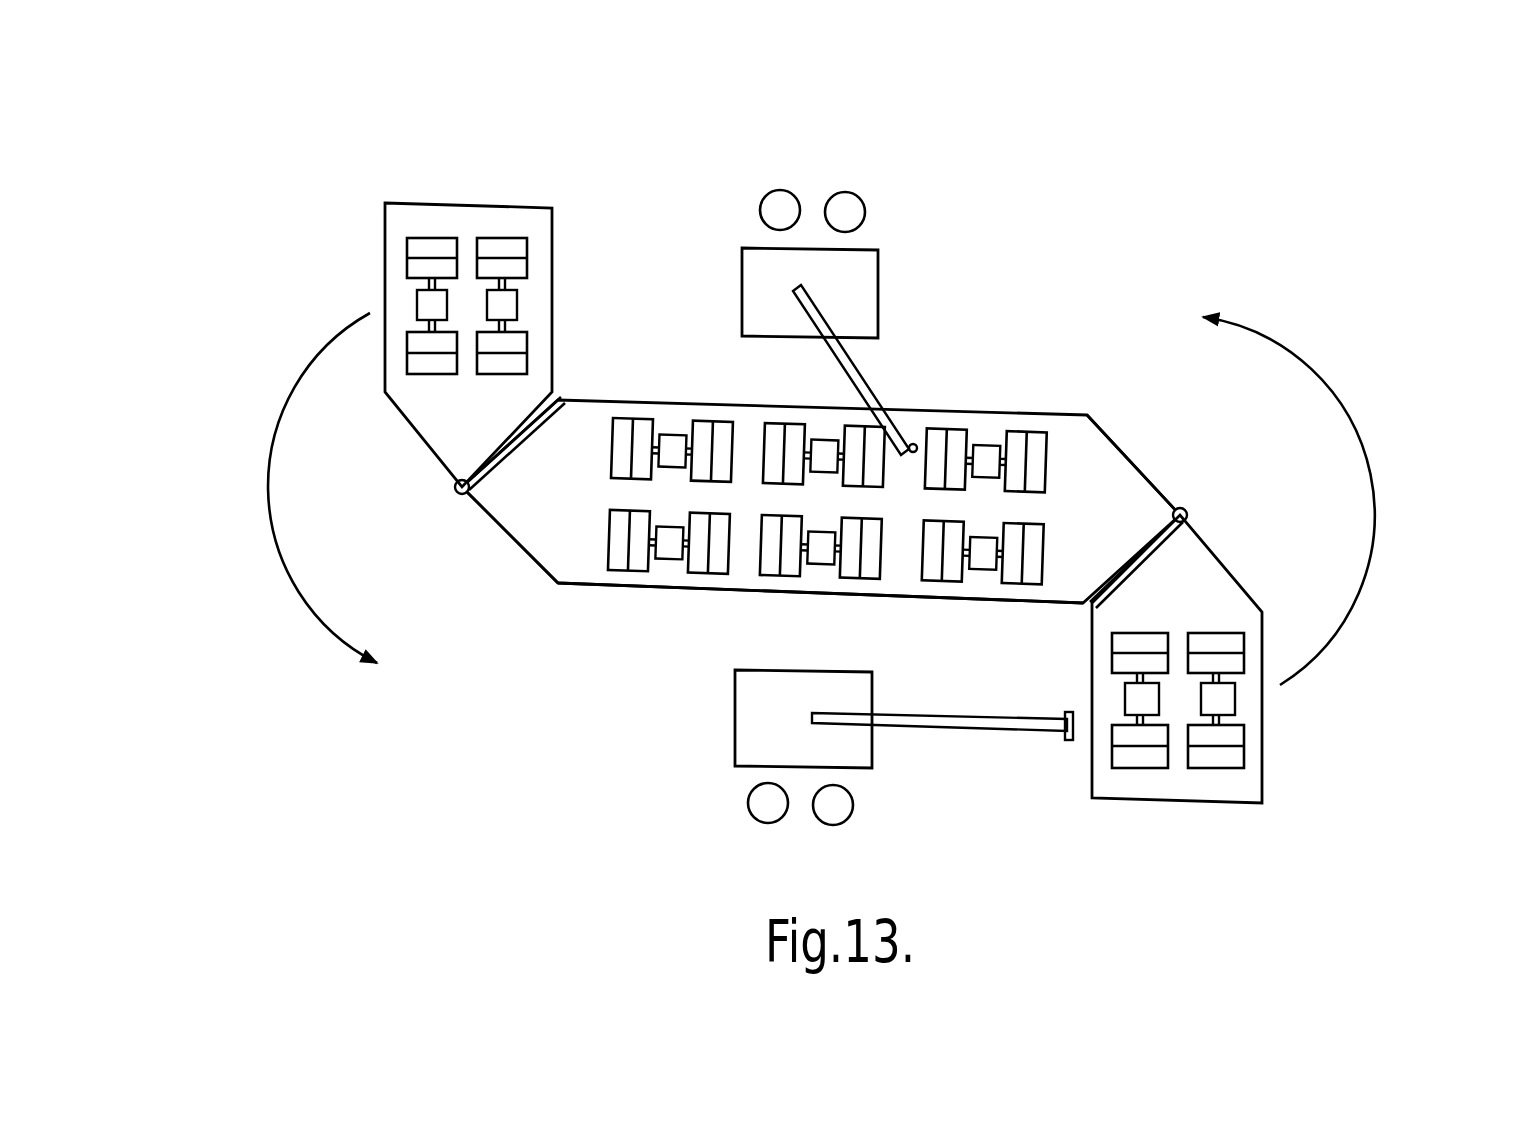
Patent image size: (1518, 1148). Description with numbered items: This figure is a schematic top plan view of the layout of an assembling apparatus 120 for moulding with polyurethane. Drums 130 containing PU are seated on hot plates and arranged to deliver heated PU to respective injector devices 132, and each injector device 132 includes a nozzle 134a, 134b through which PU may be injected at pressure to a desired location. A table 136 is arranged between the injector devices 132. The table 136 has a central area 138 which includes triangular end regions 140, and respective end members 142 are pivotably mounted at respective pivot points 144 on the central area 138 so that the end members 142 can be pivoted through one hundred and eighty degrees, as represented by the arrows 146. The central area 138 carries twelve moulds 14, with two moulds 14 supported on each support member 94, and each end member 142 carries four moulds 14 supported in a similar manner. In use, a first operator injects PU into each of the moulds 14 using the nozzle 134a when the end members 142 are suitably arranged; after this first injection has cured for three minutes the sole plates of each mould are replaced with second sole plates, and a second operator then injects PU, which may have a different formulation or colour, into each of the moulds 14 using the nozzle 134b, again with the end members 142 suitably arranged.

The transfer station 120 is at (224, 215).
The drum 130 is at (826, 210).
The injector device 132 is at (873, 305).
The nozzle 134a is at (915, 425).
The nozzle 134b is at (1050, 720).
The table 136 is at (1118, 437).
The central area 138 is at (752, 565).
The triangular end region 140 is at (557, 537).
The end member 142 is at (385, 283).
The pivot point 144 is at (455, 492).
The arrow 146 is at (265, 496).
The mould 14 is at (536, 250).
The support member 94 is at (521, 301).